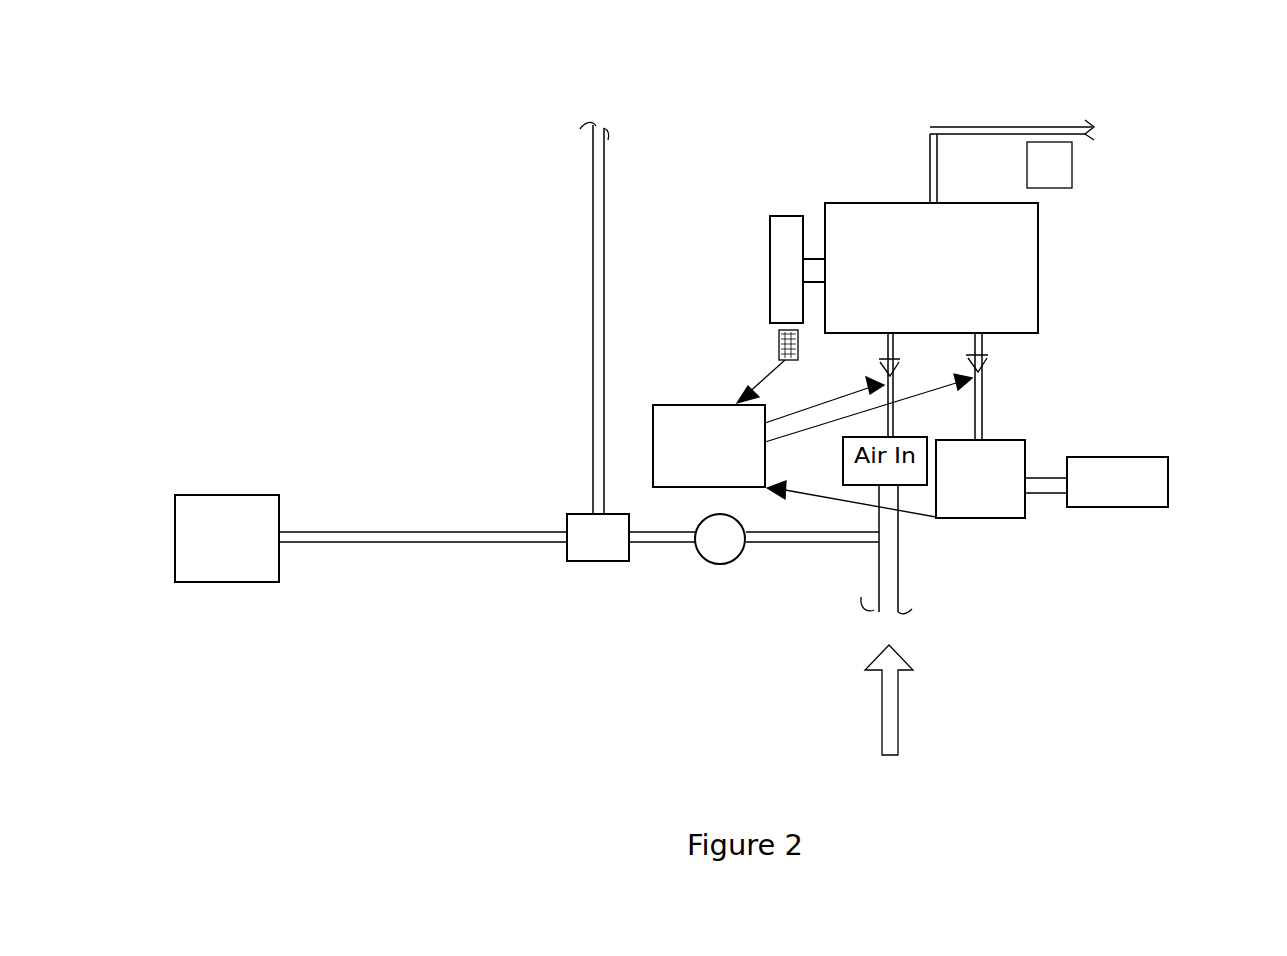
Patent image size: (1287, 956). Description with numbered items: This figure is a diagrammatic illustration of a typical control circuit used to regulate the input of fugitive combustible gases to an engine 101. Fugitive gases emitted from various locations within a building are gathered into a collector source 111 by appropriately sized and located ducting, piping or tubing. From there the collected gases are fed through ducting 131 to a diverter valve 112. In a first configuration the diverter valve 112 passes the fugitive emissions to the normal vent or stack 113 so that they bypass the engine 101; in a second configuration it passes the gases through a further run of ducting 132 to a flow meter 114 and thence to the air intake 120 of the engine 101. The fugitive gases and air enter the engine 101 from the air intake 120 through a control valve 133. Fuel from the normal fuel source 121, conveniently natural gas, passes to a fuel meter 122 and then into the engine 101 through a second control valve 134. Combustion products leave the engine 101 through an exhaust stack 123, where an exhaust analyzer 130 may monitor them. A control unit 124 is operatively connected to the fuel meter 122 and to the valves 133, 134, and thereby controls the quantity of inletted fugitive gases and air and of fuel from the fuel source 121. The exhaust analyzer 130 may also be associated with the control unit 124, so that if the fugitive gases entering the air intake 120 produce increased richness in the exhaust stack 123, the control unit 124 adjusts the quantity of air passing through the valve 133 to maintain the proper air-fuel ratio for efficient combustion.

The engine 101 is at (1038, 255).
The collector source 111 is at (228, 495).
The diverter valve 112 is at (588, 561).
The vent or stack 113 is at (604, 172).
The flow meter 114 is at (727, 563).
The air intake 120 is at (898, 548).
The fuel source 121 is at (1127, 457).
The fuel meter 122 is at (993, 518).
The exhaust stack 123 is at (1000, 127).
The control unit 124 is at (670, 404).
The exhaust analyzer 130 is at (1062, 188).
The ducting 131 is at (312, 543).
The right horizontal pipe segment 132 is at (658, 542).
The control valve 133 is at (894, 372).
The control valve 134 is at (982, 365).